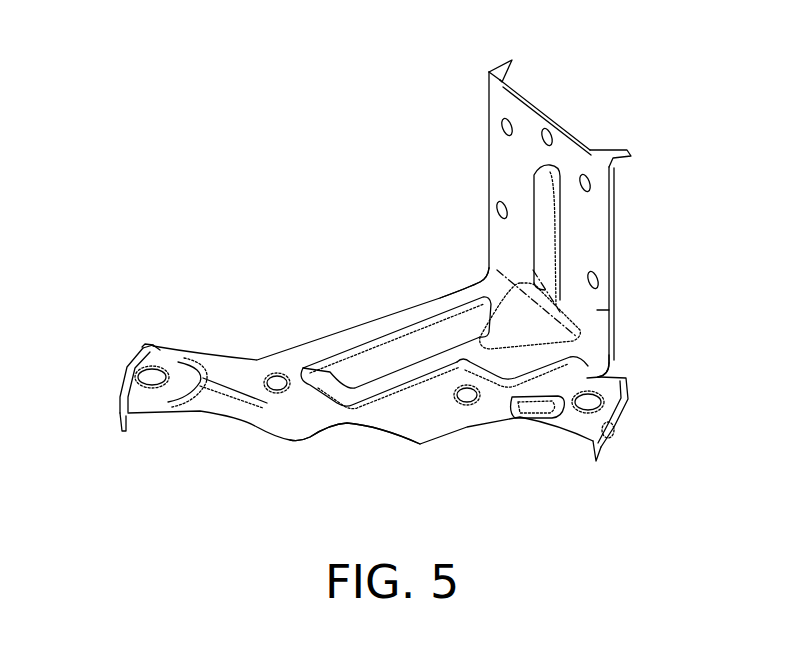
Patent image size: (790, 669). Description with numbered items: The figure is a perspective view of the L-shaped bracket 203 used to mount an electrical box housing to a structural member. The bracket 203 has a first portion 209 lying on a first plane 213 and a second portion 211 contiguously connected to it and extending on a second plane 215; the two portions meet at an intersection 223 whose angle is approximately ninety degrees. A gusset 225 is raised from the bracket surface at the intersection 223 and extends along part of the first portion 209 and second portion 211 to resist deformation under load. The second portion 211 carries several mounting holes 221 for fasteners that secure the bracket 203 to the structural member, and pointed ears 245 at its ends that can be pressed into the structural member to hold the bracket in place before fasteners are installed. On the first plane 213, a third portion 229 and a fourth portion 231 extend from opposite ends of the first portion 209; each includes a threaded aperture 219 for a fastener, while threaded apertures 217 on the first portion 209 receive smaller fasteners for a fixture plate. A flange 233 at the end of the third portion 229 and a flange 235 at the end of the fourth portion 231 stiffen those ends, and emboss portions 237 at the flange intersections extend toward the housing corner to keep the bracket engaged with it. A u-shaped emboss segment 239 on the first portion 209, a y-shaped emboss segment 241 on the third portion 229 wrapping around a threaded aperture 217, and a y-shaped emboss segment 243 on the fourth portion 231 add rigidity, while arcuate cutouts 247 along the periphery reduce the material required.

The bracket 203 is at (610, 210).
The first portion 209 is at (462, 290).
The second portion 211 is at (610, 238).
The first plane 213 is at (377, 327).
The second plane 215 is at (598, 310).
The threaded aperture 217 is at (277, 376).
The threaded aperture 219 is at (158, 369).
The mounting hole 221 is at (549, 128).
The intersection 223 is at (611, 358).
The gusset 225 is at (572, 312).
The third portion 229 is at (215, 352).
The fourth portion 231 is at (584, 444).
The flange 233 is at (119, 427).
The flange 235 is at (603, 446).
The emboss portion 237 is at (134, 352).
The emboss segment 239 is at (411, 395).
The emboss segment 241 is at (203, 388).
The emboss segment 243 is at (521, 413).
The pointed ear 245 is at (498, 66).
The arcuate cutout 247 is at (352, 430).